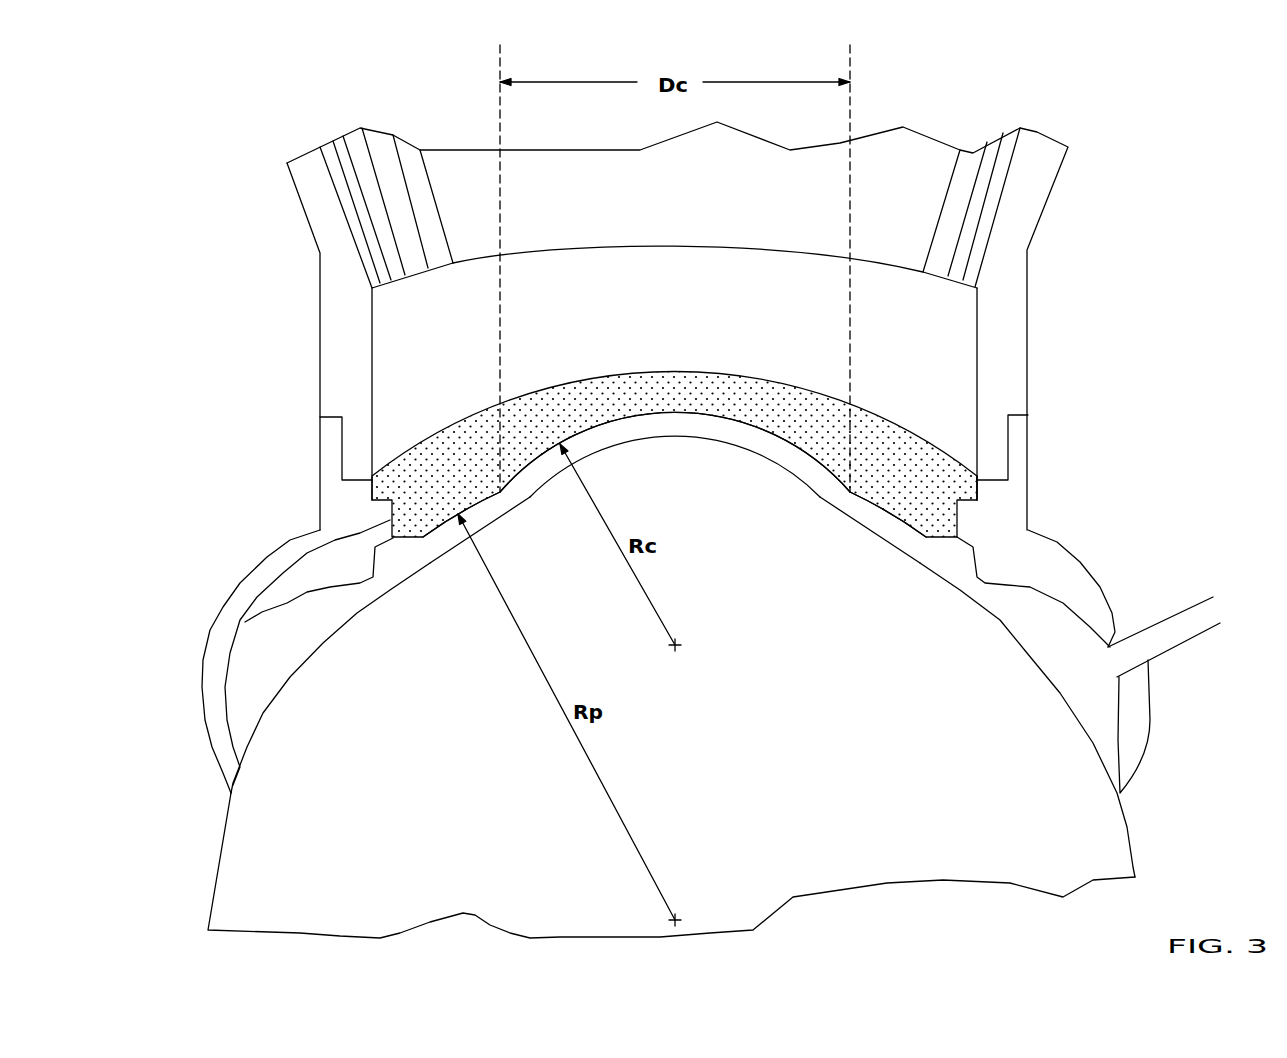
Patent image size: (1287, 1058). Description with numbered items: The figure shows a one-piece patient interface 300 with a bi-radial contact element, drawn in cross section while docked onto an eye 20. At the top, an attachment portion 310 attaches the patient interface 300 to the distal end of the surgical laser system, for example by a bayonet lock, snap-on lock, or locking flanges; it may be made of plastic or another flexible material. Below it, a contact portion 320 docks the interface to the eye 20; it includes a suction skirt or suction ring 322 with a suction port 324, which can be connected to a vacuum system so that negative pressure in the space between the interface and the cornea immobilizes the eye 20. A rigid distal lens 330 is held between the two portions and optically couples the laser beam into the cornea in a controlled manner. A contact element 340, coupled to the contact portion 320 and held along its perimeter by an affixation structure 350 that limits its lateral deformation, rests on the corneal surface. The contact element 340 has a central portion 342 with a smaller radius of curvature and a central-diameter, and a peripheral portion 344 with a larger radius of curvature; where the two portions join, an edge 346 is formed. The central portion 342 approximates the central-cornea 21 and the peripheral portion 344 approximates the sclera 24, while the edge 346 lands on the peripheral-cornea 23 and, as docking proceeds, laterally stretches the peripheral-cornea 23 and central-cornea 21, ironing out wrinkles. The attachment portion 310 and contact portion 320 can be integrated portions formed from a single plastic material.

The patient interface 300 is at (223, 142).
The attachment portion 310 is at (288, 232).
The contact portion 320 is at (267, 552).
The suction skirt or suction ring 322 is at (212, 750).
The suction port 324 is at (1157, 627).
The distal lens 330 is at (937, 328).
The contact element 340 is at (487, 440).
The central portion 342 is at (670, 407).
The peripheral portion 344 is at (433, 517).
The edge 346 is at (855, 487).
The affixation structure 350 is at (232, 590).
The eye 20 is at (822, 781).
The central-cornea 21 is at (635, 447).
The peripheral-cornea 23 is at (873, 525).
The sclera 24 is at (968, 597).